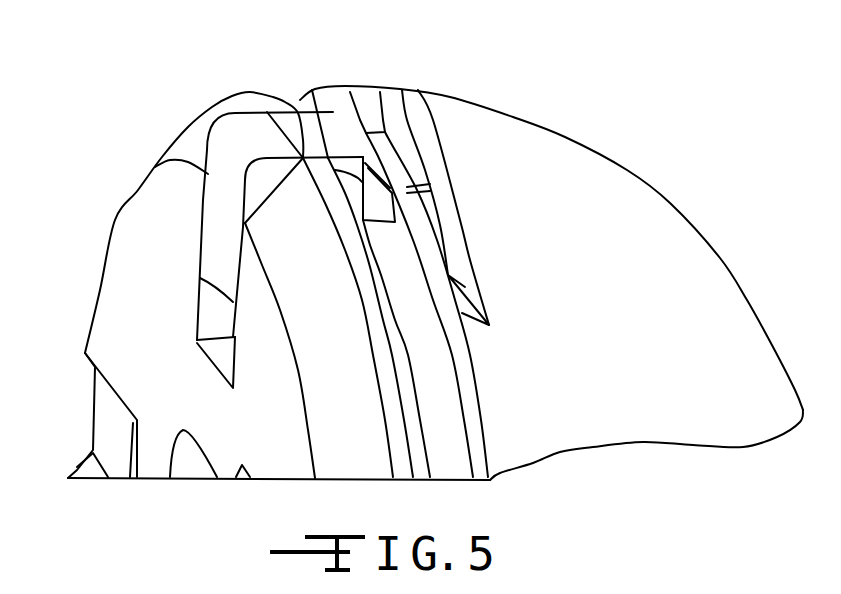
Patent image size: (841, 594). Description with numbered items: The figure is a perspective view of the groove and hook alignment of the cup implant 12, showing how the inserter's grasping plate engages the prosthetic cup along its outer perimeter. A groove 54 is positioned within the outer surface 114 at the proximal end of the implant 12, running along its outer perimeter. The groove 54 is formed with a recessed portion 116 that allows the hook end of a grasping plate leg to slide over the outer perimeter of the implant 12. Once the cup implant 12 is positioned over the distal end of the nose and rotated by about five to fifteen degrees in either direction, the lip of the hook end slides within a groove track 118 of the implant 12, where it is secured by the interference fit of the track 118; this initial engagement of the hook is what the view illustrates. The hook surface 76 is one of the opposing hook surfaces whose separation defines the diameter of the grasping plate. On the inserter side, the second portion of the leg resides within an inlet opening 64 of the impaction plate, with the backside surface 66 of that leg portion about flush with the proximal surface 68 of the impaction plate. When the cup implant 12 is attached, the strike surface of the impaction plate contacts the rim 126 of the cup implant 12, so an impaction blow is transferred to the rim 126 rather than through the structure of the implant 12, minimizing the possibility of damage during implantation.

The cup implant 12 is at (582, 142).
The groove 54 is at (384, 115).
The inlet opening 64 is at (216, 317).
The backside surface 66 is at (225, 184).
The proximal surface 68 is at (128, 292).
The hook surface 76 is at (295, 108).
The outer surface 114 is at (622, 242).
The recessed portion 116 is at (410, 158).
The groove track 118 is at (443, 207).
The rim 126 is at (303, 131).